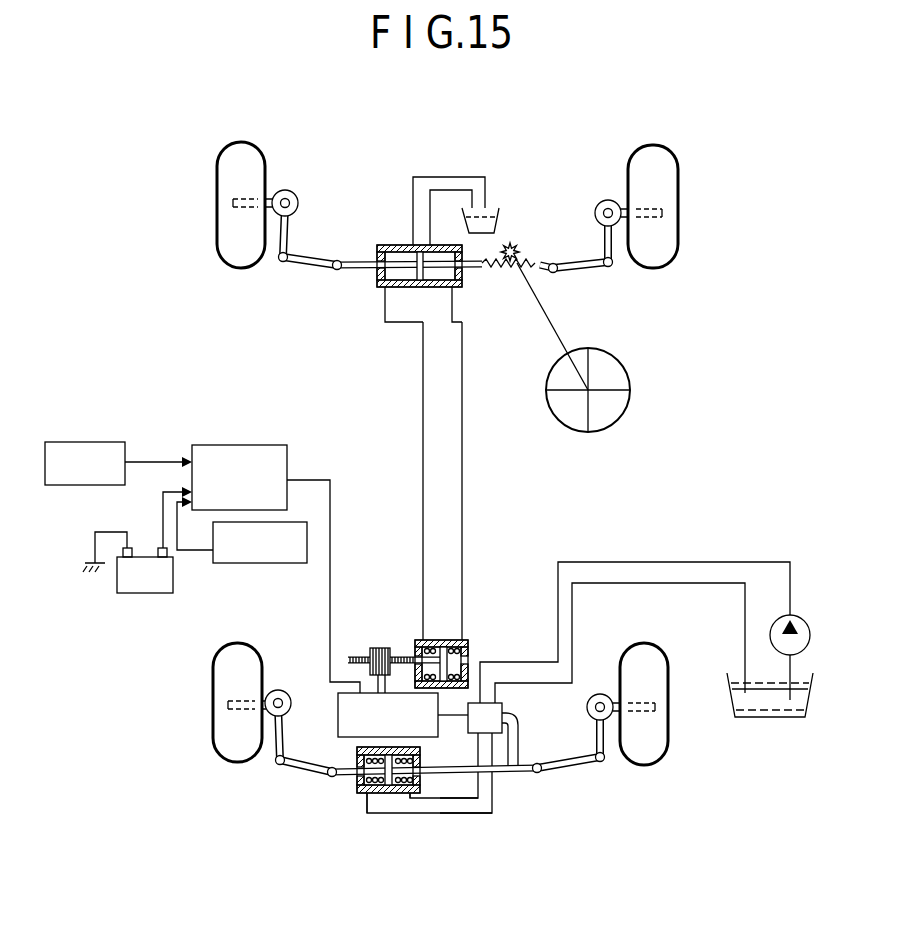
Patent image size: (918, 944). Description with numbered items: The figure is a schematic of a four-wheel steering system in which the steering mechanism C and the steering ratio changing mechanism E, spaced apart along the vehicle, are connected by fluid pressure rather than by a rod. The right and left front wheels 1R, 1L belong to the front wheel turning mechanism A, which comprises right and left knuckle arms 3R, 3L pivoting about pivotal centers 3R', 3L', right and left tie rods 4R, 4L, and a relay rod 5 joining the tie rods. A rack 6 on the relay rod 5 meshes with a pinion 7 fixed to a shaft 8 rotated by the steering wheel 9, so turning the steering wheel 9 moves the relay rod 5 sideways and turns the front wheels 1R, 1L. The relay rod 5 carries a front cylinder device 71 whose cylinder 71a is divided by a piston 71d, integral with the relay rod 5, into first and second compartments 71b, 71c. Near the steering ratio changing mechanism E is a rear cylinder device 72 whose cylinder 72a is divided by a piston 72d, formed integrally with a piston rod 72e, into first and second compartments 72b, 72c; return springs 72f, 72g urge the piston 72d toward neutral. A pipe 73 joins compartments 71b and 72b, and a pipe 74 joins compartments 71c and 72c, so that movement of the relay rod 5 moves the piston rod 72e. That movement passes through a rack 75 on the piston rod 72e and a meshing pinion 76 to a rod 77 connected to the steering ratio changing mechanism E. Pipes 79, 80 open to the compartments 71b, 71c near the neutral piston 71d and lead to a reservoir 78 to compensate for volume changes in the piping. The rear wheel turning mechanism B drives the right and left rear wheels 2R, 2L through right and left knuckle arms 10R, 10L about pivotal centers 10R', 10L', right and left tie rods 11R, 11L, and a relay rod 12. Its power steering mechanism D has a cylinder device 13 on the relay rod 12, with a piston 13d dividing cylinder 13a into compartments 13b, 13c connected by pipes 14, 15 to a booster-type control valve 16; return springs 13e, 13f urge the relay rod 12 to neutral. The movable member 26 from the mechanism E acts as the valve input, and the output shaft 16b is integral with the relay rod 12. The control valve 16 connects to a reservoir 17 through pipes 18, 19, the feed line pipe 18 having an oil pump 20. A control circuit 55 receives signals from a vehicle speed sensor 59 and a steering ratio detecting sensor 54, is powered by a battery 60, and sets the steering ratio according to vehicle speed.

The left front wheel 1L is at (215, 170).
The right front wheel 1R is at (678, 170).
The left rear wheel 2L is at (213, 730).
The right rear wheel 2R is at (668, 755).
The left knuckle arm 3L is at (306, 231).
The right knuckle arm 3R is at (634, 261).
The pivotal center 3L' is at (296, 181).
The pivotal center 3R' is at (594, 188).
The left tie rod 4L is at (302, 262).
The right tie rod 4R is at (585, 270).
The relay rod 5 is at (350, 270).
The rack 6 is at (536, 262).
The pinion 7 is at (514, 250).
The shaft 8 is at (548, 322).
The steering wheel 9 is at (630, 395).
The left knuckle arm 10L is at (304, 732).
The right knuckle arm 10R is at (638, 755).
The pivotal center 10L' is at (267, 658).
The pivotal center 10R' is at (598, 678).
The left tie rod 11L is at (290, 770).
The right tie rod 11R is at (580, 766).
The relay rod 12 is at (358, 790).
The cylinder device 13 is at (431, 823).
The cylinder 13a is at (394, 797).
The compartment 13b is at (372, 797).
The compartment 13c is at (405, 797).
The piston 13d is at (386, 797).
The return spring 13e is at (357, 770).
The return spring 13f is at (430, 785).
The pipe 14 is at (470, 815).
The pipe 15 is at (470, 800).
The control valve 16 is at (505, 712).
The output shaft 16b is at (525, 745).
The reservoir 17 is at (765, 717).
The pipe 18 is at (735, 562).
The pipe 19 is at (640, 583).
The oil pump 20 is at (778, 618).
The movable member 26 is at (455, 717).
The steering ratio detecting sensor 54 is at (253, 563).
The control circuit 55 is at (255, 445).
The vehicle speed sensor 59 is at (105, 442).
The battery 60 is at (140, 593).
The front cylinder device 71 is at (422, 261).
The cylinder 71a is at (395, 245).
The first compartment 71b is at (380, 287).
The second compartment 71c is at (462, 283).
The piston 71d is at (418, 290).
The rear cylinder device 72 is at (493, 594).
The cylinder 72a is at (450, 648).
The first compartment 72b is at (415, 655).
The second compartment 72c is at (455, 665).
The piston 72d is at (445, 645).
The piston rod 72e is at (370, 655).
The return spring 72f is at (435, 645).
The return spring 72g is at (470, 650).
The pipe 73 is at (423, 440).
The pipe 74 is at (462, 445).
The rack 75 is at (345, 660).
The pinion 76 is at (380, 650).
The rod 77 is at (378, 685).
The reservoir 78 is at (500, 220).
The pipe 79 is at (435, 177).
The pipe 80 is at (460, 190).
The front wheel turning mechanism A is at (320, 273).
The rear wheel turning mechanism B is at (300, 778).
The steering mechanism C is at (637, 360).
The power steering mechanism D is at (452, 818).
The steering ratio changing mechanism E is at (338, 710).